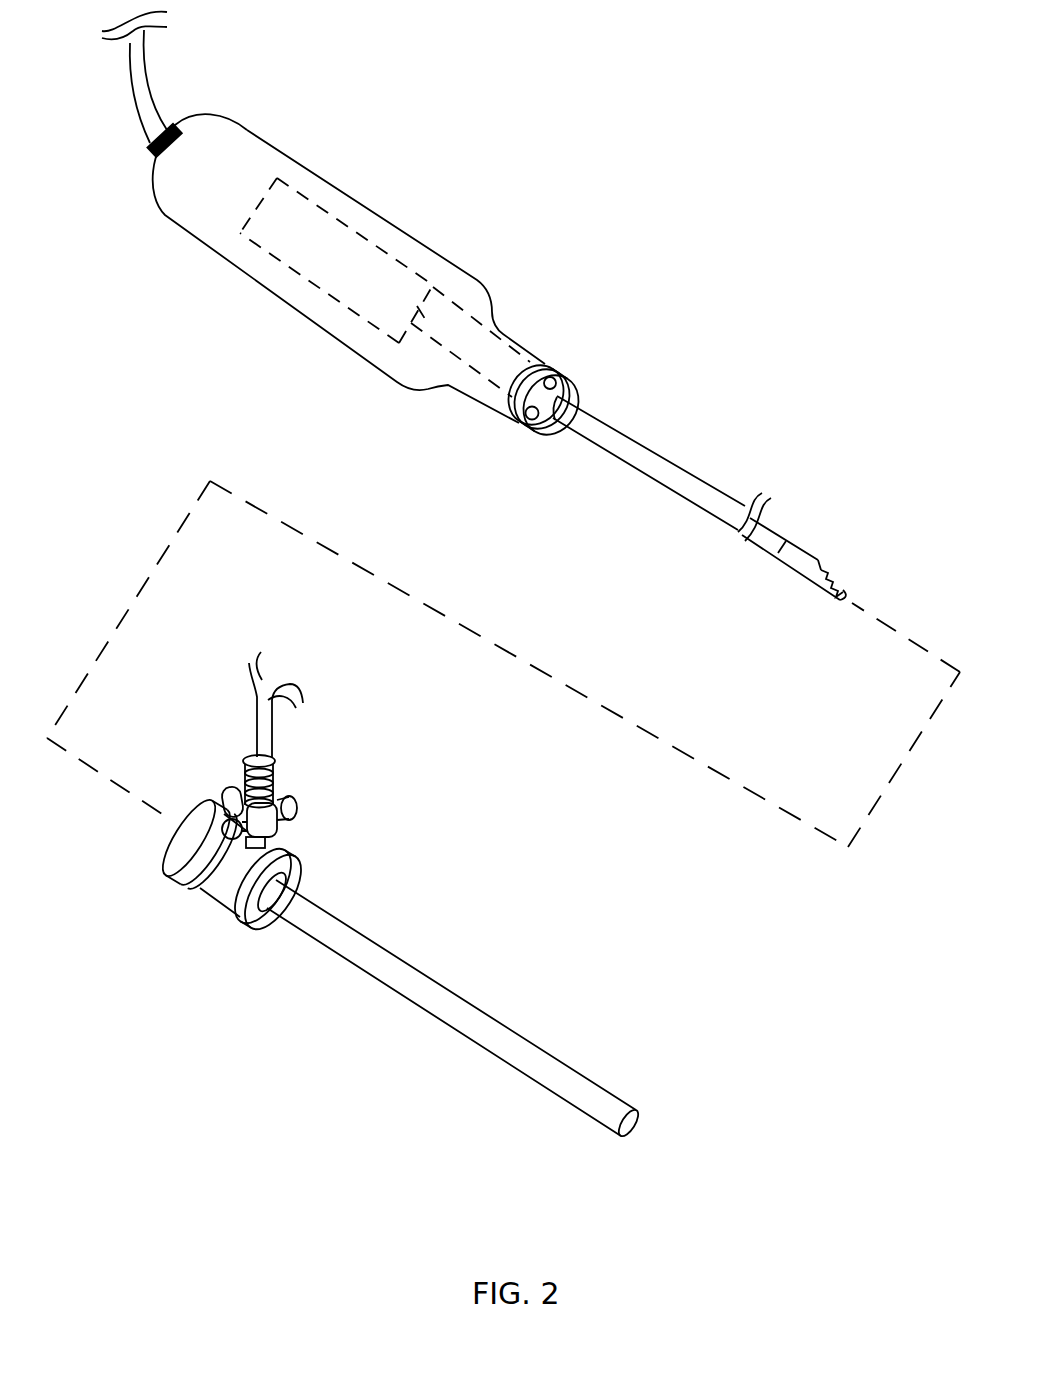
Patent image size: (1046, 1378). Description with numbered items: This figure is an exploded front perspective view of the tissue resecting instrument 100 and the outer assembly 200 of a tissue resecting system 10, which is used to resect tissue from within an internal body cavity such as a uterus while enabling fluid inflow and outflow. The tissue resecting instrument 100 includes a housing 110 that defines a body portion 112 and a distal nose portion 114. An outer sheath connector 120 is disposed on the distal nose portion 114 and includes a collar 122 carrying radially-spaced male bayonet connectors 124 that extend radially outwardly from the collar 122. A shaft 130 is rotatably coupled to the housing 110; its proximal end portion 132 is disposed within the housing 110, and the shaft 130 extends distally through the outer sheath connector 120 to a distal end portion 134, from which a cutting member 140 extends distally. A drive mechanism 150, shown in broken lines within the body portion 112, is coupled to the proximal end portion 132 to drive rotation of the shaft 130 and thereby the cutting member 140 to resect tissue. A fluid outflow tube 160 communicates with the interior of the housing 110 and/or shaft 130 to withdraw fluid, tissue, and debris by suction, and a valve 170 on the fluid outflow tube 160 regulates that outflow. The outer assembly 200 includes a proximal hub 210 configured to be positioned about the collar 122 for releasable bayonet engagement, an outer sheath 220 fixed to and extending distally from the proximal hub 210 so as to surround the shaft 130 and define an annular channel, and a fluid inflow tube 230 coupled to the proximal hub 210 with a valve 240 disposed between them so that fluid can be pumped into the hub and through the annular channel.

The tissue resecting system 10 is at (760, 240).
The tissue resecting instrument 100 is at (546, 232).
The housing 110 is at (400, 222).
The body portion 112 is at (250, 170).
The distal nose portion 114 is at (528, 352).
The outer sheath connector 120 is at (538, 432).
The collar 122 is at (521, 403).
The male bayonet connectors 124 is at (560, 386).
The shaft 130 is at (677, 480).
The proximal end portion 132 is at (410, 340).
The distal end portion 134 is at (778, 537).
The cutting member 140 is at (838, 618).
The drive mechanism 150 is at (327, 272).
The fluid outflow tube 160 is at (143, 74).
The valve 170 is at (153, 157).
The outer assembly 200 is at (302, 1032).
The proximal hub 210 is at (228, 900).
The outer sheath 220 is at (413, 977).
The fluid inflow tube 230 is at (262, 737).
The valve 240 is at (290, 824).